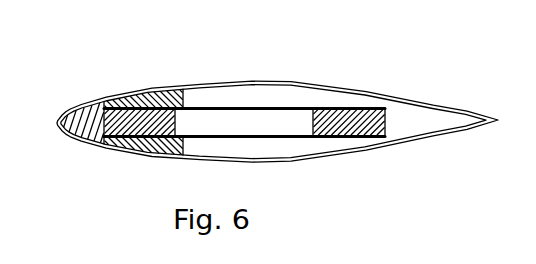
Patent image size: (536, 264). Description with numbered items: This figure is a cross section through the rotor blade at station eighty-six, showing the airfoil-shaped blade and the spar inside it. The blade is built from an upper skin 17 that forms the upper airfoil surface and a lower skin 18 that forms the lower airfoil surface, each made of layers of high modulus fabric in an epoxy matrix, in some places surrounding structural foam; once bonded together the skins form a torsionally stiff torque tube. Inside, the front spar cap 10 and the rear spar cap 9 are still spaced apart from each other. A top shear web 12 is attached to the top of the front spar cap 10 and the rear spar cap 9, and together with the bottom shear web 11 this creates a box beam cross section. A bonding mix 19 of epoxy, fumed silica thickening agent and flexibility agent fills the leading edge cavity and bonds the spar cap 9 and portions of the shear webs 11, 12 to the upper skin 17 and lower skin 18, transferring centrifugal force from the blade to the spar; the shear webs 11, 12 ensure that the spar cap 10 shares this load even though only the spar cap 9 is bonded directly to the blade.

The rear spar cap 9 is at (328, 118).
The front spar cap 10 is at (128, 93).
The bottom shear web 11 is at (308, 137).
The top shear web 12 is at (246, 107).
The upper skin 17 is at (212, 84).
The lower skin 18 is at (104, 151).
The bonding mix 19 is at (163, 152).